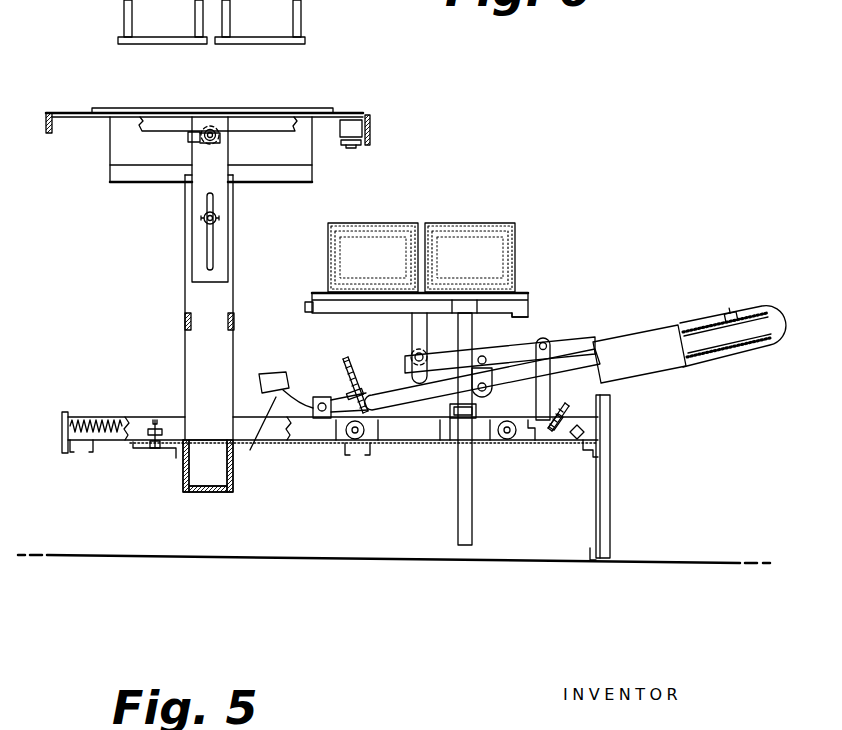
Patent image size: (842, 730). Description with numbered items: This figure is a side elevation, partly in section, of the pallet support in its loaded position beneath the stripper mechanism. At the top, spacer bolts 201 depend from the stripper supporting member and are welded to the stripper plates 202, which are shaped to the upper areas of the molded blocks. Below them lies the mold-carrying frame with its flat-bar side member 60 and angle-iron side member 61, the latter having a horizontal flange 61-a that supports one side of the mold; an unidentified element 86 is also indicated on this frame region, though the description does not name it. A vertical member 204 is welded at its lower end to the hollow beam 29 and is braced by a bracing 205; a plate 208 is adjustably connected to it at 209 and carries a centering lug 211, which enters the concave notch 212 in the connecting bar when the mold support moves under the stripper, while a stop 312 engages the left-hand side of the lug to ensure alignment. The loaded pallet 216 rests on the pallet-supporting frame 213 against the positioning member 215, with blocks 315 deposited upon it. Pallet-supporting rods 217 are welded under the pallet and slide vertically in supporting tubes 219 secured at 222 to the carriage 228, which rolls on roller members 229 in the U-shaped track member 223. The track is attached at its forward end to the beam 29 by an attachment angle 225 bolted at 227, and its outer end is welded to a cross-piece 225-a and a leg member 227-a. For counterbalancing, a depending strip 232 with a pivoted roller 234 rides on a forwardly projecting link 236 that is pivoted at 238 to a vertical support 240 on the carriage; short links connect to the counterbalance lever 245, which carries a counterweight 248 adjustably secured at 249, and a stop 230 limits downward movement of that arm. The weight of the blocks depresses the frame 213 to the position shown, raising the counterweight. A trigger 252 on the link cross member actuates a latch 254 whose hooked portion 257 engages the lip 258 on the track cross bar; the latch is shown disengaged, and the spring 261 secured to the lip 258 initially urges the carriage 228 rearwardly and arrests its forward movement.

The spacer bolts 201 is at (302, 23).
The stripper plates 202 is at (287, 45).
The table 86 is at (77, 112).
The side member 60 is at (52, 135).
The side member 61 is at (371, 126).
The horizontal flange 61-a is at (358, 148).
The stop 312 is at (190, 137).
The notch 212 is at (212, 126).
The centering member or lug 211 is at (222, 135).
The vertical member 204 is at (232, 340).
The bracing 205 is at (232, 312).
The plate 208 is at (216, 196).
The adjustable connection 209 is at (218, 219).
The beam 29 is at (218, 494).
The lip 258 is at (64, 412).
The spring 261 is at (97, 417).
The bolt 227 is at (150, 450).
The attachment angle 225 is at (176, 460).
The roller members 229 is at (348, 440).
The carriage 228 is at (487, 440).
The securing point 222 is at (452, 430).
The frame track member 223 is at (557, 442).
The latch 254 is at (290, 397).
The hooked portion 257 is at (263, 434).
The trigger 252 is at (352, 368).
The pallet-supporting frame 213 is at (330, 306).
The mold pallet positioning frame member 215 is at (312, 296).
The pallet 216 is at (524, 292).
The blocks 315 is at (493, 225).
The strip 232 is at (411, 323).
The link 236 is at (412, 359).
The pallet-supporting rod 217 is at (474, 522).
The supporting tube 219 is at (458, 396).
The roller 234 is at (430, 353).
The vertical support 240 is at (553, 358).
The pivot 238 is at (550, 338).
The counterbalance lever 245 is at (598, 362).
The counterweight 248 is at (658, 322).
The adjustable securing 249 is at (734, 312).
The stop 230 is at (575, 412).
The leg member 227-a is at (608, 486).
The cross-piece 225-a is at (603, 447).